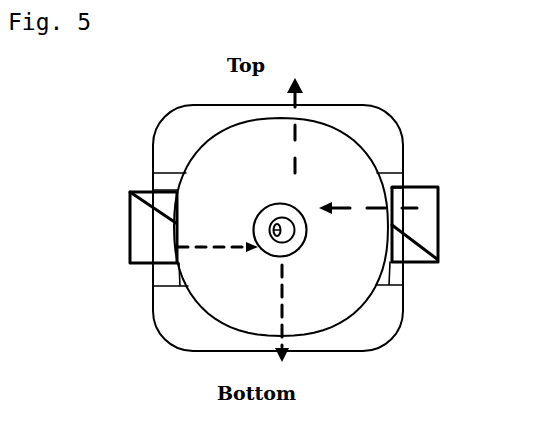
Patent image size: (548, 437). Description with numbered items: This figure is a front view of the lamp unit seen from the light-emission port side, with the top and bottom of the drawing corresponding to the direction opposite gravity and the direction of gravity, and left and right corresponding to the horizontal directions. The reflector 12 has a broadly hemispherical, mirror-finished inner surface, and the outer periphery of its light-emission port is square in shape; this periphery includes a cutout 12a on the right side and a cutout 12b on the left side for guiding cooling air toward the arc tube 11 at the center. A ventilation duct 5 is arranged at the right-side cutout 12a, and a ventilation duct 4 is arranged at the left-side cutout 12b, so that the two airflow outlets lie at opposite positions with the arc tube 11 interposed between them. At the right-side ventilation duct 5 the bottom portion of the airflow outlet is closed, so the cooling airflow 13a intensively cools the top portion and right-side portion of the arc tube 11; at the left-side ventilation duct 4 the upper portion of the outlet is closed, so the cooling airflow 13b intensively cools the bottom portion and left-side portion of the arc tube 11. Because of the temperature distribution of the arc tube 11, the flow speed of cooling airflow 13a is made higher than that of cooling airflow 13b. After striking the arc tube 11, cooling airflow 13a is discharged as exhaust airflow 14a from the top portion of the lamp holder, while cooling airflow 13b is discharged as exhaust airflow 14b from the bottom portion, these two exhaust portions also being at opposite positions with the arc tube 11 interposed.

The ventilation duct 4 is at (130, 204).
The ventilation duct 5 is at (438, 235).
The arc tube 11 is at (277, 211).
The reflector 12 is at (398, 328).
The cutout 12a is at (391, 176).
The cutout 12b is at (163, 276).
The cooling airflow 13a is at (380, 204).
The cooling airflow 13b is at (241, 244).
The exhaust airflow 14a is at (296, 135).
The exhaust airflow 14b is at (283, 303).